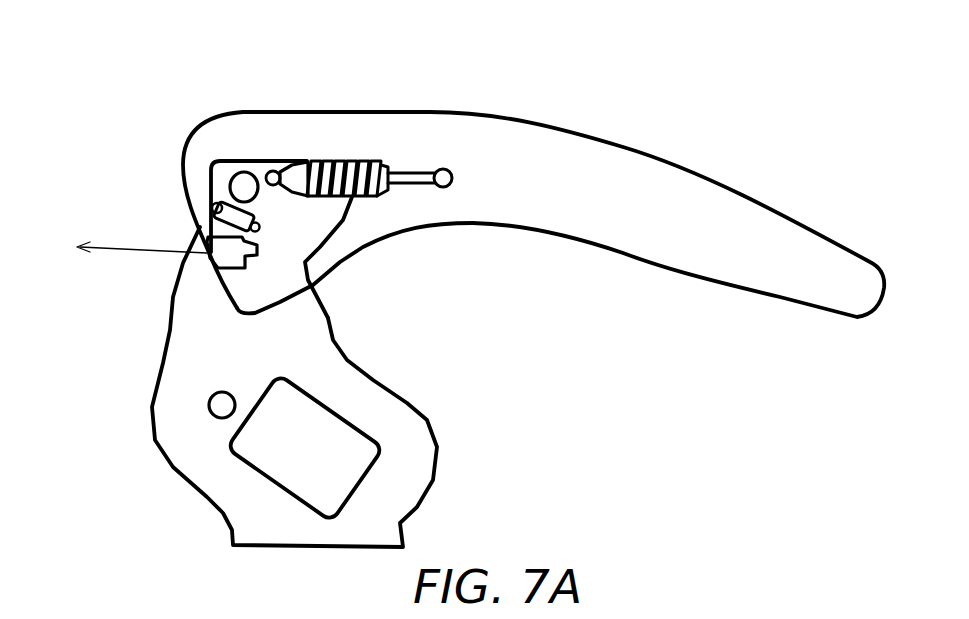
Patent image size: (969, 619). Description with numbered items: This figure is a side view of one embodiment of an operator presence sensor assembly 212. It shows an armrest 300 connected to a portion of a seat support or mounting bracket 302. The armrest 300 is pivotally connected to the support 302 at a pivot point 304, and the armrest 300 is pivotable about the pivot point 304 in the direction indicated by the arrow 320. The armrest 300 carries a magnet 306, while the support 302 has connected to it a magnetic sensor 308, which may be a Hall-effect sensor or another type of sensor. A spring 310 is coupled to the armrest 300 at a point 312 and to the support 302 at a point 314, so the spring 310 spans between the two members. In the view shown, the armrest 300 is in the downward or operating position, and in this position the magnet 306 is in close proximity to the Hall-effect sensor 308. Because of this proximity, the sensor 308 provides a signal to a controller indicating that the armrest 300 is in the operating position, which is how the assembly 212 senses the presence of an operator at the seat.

The operator presence sensor assembly 212 is at (167, 182).
The armrest 300 is at (522, 232).
The seat support or mounting bracket 302 is at (230, 485).
The pivot point 304 is at (250, 178).
The magnet 306 is at (227, 207).
The magnetic sensor 308 is at (227, 293).
The spring 310 is at (370, 165).
The point 312 is at (445, 187).
The point 314 is at (277, 174).
The arrow 320 is at (893, 225).